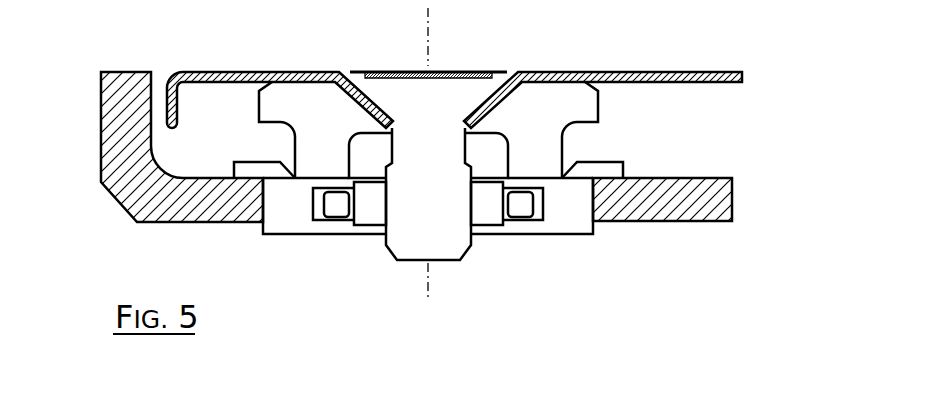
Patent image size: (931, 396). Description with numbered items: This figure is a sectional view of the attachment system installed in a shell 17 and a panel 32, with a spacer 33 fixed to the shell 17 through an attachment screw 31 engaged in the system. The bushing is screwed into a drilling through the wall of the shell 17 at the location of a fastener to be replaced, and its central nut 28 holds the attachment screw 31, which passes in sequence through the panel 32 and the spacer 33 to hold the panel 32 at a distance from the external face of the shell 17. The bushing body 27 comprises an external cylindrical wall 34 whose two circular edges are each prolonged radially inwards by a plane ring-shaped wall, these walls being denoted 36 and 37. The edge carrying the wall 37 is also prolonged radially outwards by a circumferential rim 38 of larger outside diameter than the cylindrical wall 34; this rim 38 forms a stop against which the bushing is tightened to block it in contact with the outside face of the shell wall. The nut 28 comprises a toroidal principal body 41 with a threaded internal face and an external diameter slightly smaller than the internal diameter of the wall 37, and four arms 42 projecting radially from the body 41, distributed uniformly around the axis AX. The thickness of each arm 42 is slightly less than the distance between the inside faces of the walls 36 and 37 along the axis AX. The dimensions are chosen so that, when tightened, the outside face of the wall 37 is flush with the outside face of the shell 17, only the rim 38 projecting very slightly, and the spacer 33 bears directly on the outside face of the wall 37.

The shell 17 is at (717, 158).
The bushing body 27 is at (594, 248).
The central nut 28 is at (373, 254).
The attachment screw 31 is at (397, 87).
The panel 32 is at (682, 78).
The spacer 33 is at (612, 116).
The external cylindrical wall 34 is at (275, 204).
The plane ring-shaped wall 36 is at (330, 229).
The plane ring-shaped wall 37 is at (330, 185).
The circumferential rim 38 is at (247, 168).
The toroidal principal body 41 is at (487, 216).
The arms 42 is at (520, 208).
The axis AX is at (428, 50).